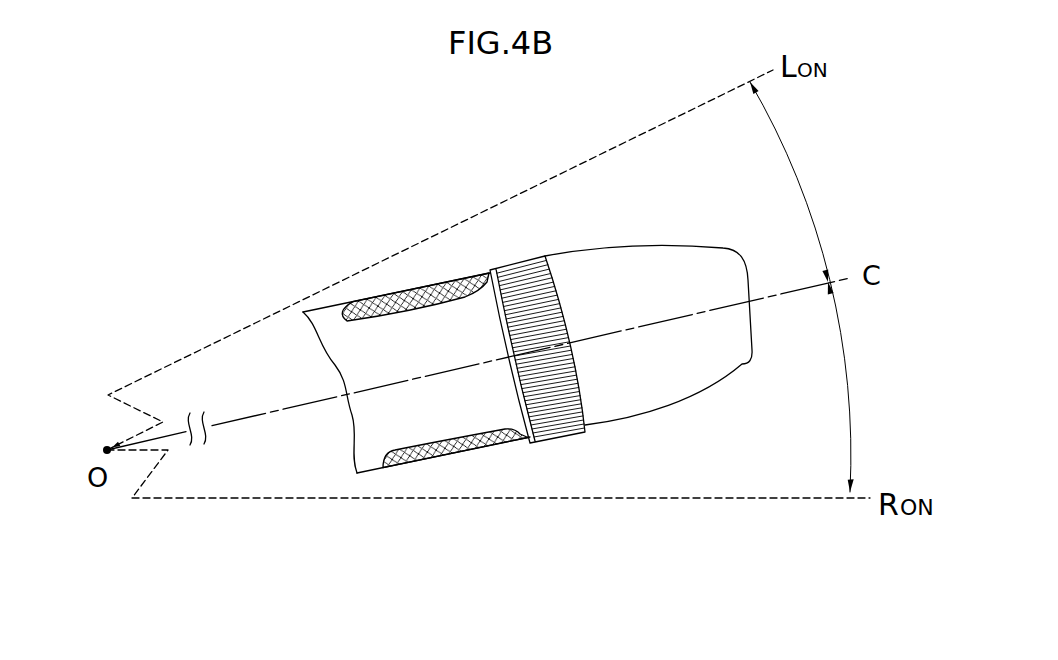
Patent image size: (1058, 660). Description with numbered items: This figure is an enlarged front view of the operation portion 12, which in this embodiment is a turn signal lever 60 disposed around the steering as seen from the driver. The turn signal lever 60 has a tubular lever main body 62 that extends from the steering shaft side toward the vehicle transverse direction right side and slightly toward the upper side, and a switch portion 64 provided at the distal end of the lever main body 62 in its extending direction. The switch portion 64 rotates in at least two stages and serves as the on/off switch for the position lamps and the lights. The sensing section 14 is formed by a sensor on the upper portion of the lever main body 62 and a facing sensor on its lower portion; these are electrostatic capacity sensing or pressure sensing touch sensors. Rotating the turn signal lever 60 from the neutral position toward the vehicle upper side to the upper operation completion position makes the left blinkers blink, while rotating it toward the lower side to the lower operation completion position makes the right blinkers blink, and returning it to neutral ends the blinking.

The operation portion 12 is at (527, 355).
The turn signal lever 60 is at (623, 213).
The lever main body 62 is at (383, 450).
The switch portion 64 is at (672, 257).
The sensing section 14 is at (432, 288).